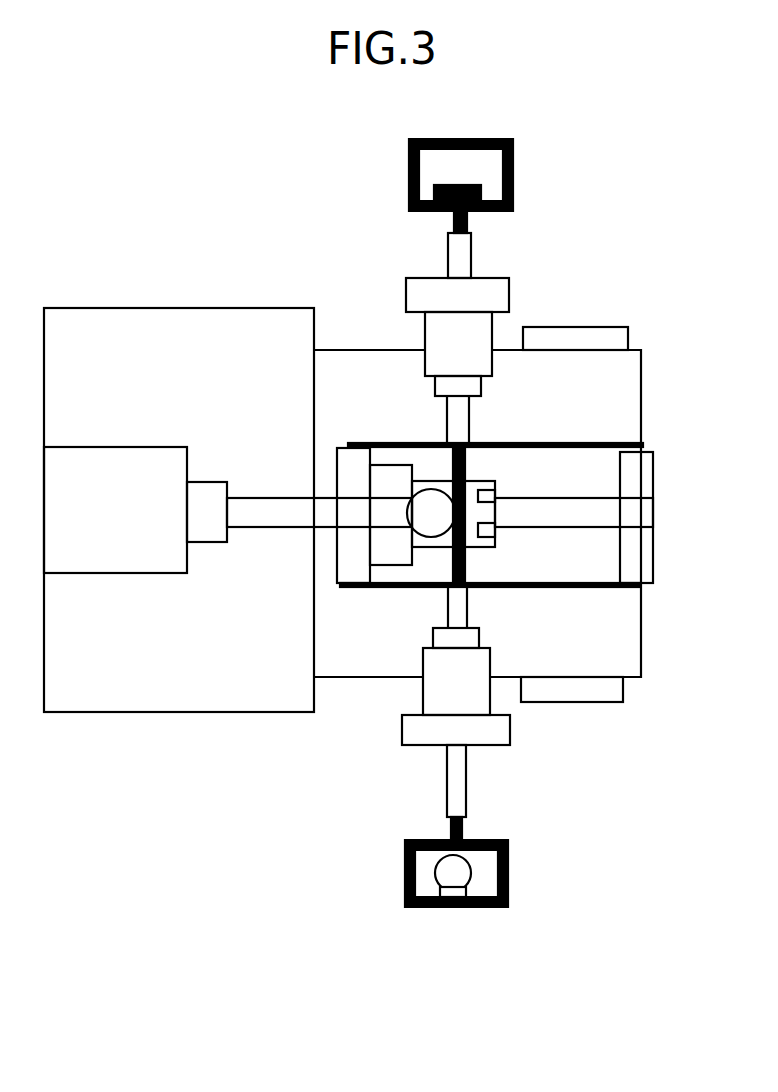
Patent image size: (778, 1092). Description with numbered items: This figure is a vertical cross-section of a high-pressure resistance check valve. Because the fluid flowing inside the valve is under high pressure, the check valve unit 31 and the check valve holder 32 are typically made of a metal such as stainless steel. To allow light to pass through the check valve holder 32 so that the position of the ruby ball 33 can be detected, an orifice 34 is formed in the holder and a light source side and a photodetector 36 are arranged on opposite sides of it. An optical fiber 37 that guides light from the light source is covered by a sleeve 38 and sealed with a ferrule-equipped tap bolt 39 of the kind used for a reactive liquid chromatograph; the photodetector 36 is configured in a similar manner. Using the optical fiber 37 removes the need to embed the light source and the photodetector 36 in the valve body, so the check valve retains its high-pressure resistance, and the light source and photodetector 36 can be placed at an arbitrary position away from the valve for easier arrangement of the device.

The check valve unit 31 is at (149, 713).
The check valve holder 32 is at (545, 443).
The ruby ball 33 is at (428, 488).
The orifice 34 is at (465, 470).
The photodetector 36 is at (513, 173).
The optical fiber 37 is at (462, 828).
The sleeve 38 is at (447, 783).
The ferrule-equipped tap bolt 39 is at (510, 730).